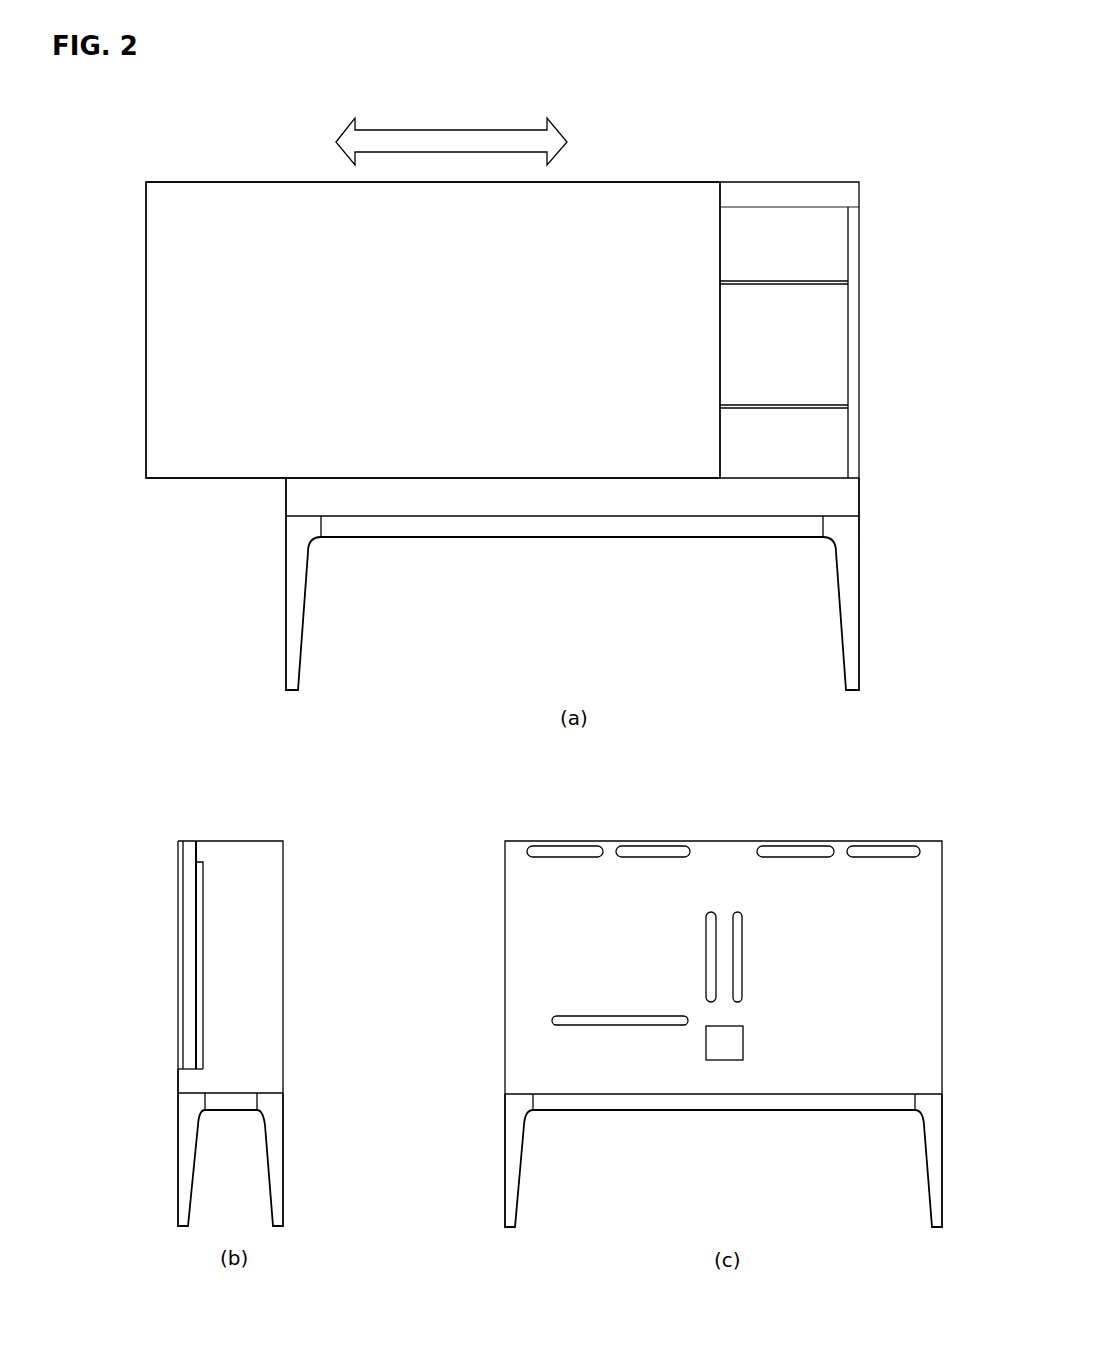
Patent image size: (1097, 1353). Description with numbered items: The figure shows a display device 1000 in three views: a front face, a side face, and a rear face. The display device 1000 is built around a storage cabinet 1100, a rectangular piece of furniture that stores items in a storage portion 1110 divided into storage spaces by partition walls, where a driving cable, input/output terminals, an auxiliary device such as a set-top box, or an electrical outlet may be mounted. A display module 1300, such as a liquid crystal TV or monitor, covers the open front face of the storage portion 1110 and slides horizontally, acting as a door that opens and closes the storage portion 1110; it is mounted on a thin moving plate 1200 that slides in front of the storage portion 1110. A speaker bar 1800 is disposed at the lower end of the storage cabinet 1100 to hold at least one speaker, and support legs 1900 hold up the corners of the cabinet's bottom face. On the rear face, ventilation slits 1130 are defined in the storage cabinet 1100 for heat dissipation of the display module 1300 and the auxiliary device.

The display device 1000 is at (186, 124).
The storage cabinet 1100 is at (790, 199).
The storage portion 1110 is at (812, 250).
The ventilation slit 1130 is at (738, 967).
The moving plate 1200 is at (197, 876).
The display module 1300 is at (256, 213).
The speaker bar 1800 is at (842, 494).
The support leg 1900 is at (842, 539).